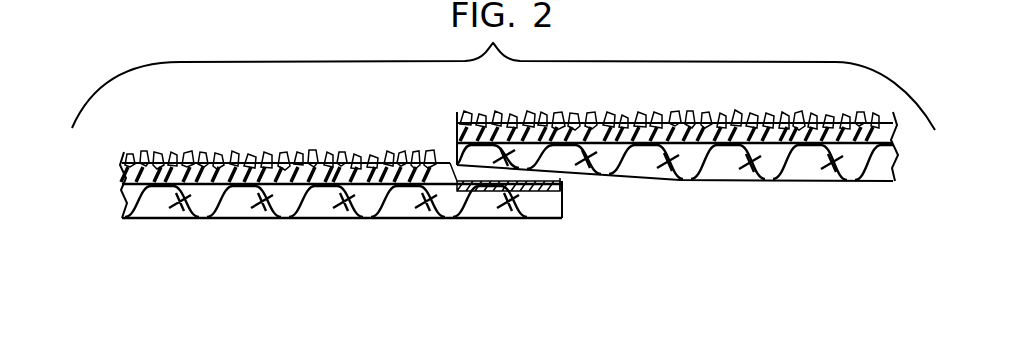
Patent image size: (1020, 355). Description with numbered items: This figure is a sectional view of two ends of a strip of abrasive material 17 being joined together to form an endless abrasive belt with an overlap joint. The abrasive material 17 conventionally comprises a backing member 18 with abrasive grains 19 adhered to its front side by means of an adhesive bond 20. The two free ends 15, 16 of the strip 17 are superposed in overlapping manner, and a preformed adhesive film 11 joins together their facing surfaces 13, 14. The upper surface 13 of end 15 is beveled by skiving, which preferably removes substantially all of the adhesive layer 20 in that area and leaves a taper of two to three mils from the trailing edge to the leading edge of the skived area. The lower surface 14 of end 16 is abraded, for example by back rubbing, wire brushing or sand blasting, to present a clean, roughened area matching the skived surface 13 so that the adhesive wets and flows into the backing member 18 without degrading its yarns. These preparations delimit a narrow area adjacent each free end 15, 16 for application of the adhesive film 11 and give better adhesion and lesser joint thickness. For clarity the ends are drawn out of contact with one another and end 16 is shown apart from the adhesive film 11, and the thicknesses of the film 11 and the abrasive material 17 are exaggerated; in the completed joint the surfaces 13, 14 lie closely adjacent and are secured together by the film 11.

The adhesive film 11 is at (560, 185).
The skived surface 13 is at (500, 187).
The abraded lower surface 14 is at (505, 192).
The free end 15 is at (538, 230).
The free end 16 is at (446, 113).
The strip of abrasive material 17 is at (147, 230).
The backing member 18 is at (317, 218).
The abrasive grains 19 is at (345, 156).
The adhesive bond 20 is at (196, 218).